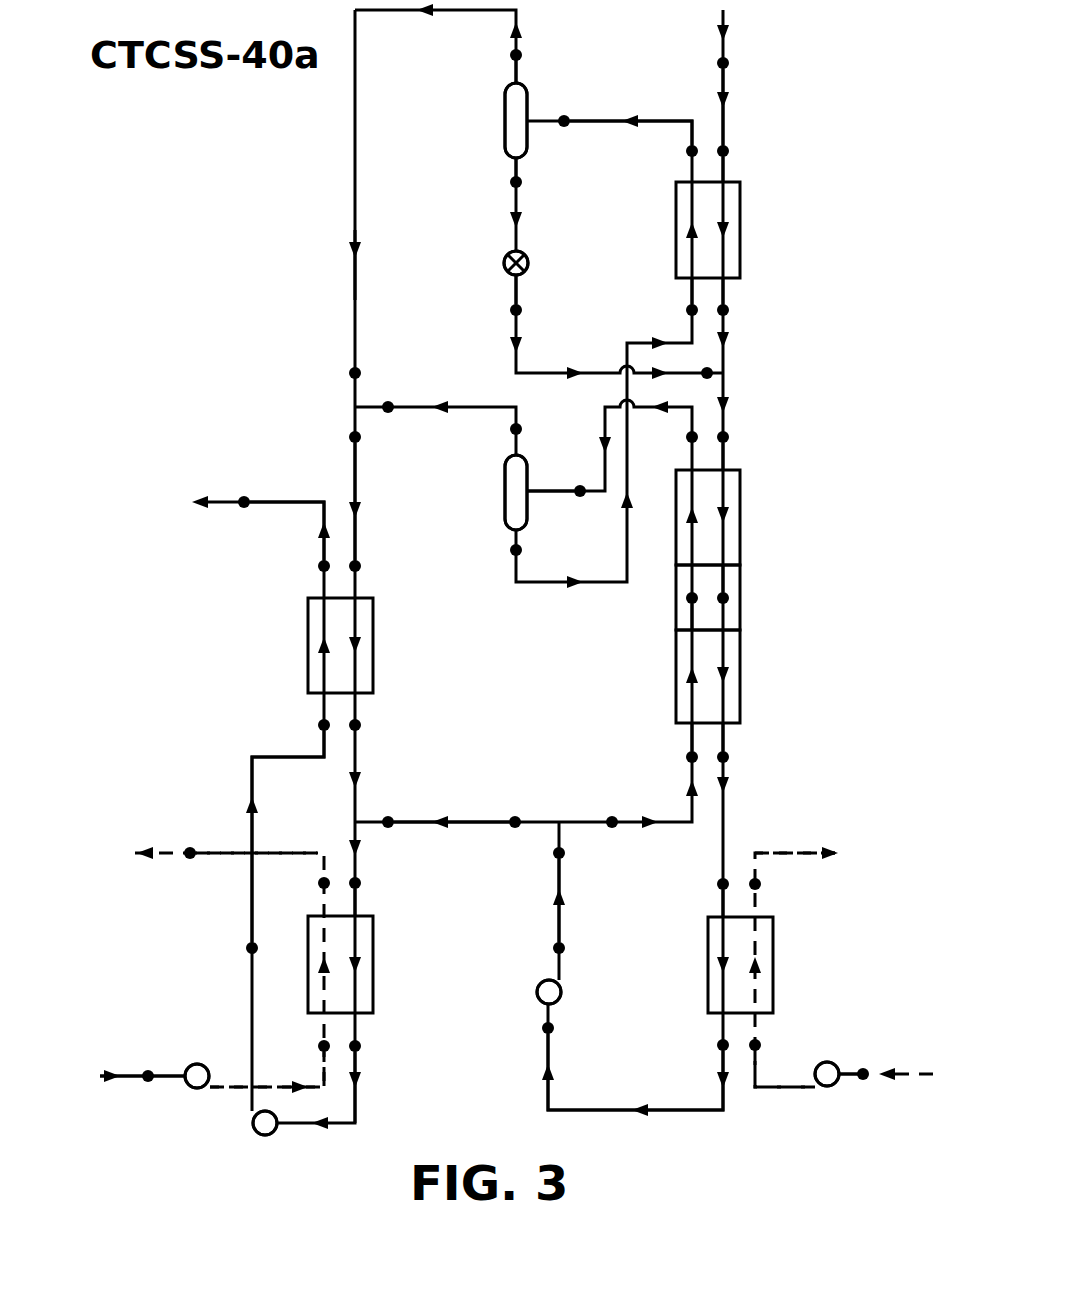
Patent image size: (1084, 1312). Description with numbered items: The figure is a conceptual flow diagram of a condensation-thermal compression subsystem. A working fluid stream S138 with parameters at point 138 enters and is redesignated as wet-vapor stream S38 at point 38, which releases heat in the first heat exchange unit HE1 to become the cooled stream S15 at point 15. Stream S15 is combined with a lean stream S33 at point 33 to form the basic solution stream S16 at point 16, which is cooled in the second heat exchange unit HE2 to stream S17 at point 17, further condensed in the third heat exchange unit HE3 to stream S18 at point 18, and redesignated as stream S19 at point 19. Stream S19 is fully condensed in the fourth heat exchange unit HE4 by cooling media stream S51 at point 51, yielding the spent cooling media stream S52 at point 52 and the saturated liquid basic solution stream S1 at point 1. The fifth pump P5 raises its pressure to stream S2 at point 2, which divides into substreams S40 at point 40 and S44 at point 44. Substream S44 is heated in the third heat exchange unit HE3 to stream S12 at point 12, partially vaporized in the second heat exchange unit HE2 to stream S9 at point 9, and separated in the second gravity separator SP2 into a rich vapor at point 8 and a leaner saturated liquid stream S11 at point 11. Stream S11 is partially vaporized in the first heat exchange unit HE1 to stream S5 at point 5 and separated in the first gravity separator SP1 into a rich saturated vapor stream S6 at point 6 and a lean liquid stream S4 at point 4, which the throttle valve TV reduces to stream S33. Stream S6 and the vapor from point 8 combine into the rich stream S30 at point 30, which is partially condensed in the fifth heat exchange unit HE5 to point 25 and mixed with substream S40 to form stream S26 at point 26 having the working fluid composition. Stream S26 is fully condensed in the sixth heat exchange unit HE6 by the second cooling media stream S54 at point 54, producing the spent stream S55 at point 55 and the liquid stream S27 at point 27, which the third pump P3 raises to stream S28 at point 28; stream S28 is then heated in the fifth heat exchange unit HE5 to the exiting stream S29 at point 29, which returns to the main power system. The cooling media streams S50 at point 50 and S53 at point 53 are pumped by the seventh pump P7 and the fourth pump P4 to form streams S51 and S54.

The first heat exchange unit HE1 is at (736, 230).
The second heat exchange unit HE2 is at (736, 517).
The third heat exchange unit HE3 is at (736, 676).
The fourth heat exchange unit HE4 is at (769, 965).
The fifth heat exchange unit HE5 is at (369, 645).
The sixth heat exchange unit HE6 is at (369, 964).
The first gravity separator SP1 is at (487, 120).
The second gravity separator SP2 is at (489, 492).
The throttle valve TV is at (495, 263).
The third pump P3 is at (246, 1123).
The fourth pump P4 is at (198, 1060).
The fifth pump P5 is at (532, 992).
The seventh pump P7 is at (827, 1059).
The point 1 is at (635, 1037).
The point 2 is at (571, 901).
The point 4 is at (503, 183).
The point 5 is at (627, 125).
The point 6 is at (423, 215).
The point 8 is at (451, 408).
The point 9 is at (635, 461).
The point 11 is at (584, 431).
The point 12 is at (672, 599).
The point 15 is at (742, 311).
The point 16 is at (742, 438).
The point 17 is at (743, 599).
The point 18 is at (742, 758).
The point 19 is at (704, 885).
The point 25 is at (374, 726).
The point 26 is at (374, 884).
The point 27 is at (374, 1047).
The point 28 is at (269, 837).
The point 29 is at (279, 524).
The point 30 is at (374, 502).
The point 33 is at (596, 339).
The point 38 is at (742, 152).
The point 40 is at (451, 808).
The point 44 is at (647, 787).
The point 50 is at (862, 1089).
The point 51 is at (774, 1046).
The point 52 is at (774, 885).
The point 53 is at (147, 1063).
The point 54 is at (305, 1047).
The point 55 is at (252, 857).
The point 138 is at (749, 64).
The fully condensed basic solution stream S1 is at (548, 1095).
The higher pressure fully condensed basic solution stream S2 is at (559, 925).
The lean saturated liquid stream S4 is at (516, 160).
The leaner vapor-liquid stream S5 is at (600, 121).
The rich saturated vapor stream S6 is at (516, 73).
The partially vaporized basic solution stream S9 is at (540, 493).
The saturated liquid stream S11 is at (692, 290).
The heated basic solution stream S12 is at (692, 612).
The cooled working fluid stream S15 is at (723, 290).
The mixed vapor-liquid basic solution stream S16 is at (723, 458).
The further condensed basic solution stream S17 is at (723, 580).
The further condensed basic solution stream S18 is at (723, 740).
The basic solution stream S19 is at (723, 900).
The mixed stream S26 is at (358, 900).
The fully condensed working fluid stream S27 is at (360, 1110).
The intermediate pressure fully condensed working fluid stream S28 is at (275, 757).
The working fluid stream S29 is at (292, 505).
The rich, slightly wet vapor stream S30 is at (355, 462).
The lower pressure lean stream S33 is at (516, 297).
The working fluid stream S38 is at (723, 165).
The basic solution substream S40 is at (420, 822).
The basic solution substream S44 is at (692, 740).
The cooling media stream S50 is at (842, 1070).
The cooling media stream S51 is at (790, 1090).
The spent cooling media stream S52 is at (790, 853).
The cooling media stream S53 is at (165, 1076).
The second cooling media stream S54 is at (235, 1087).
The spent second cooling media stream S55 is at (250, 850).
The working fluid stream S138 is at (723, 80).